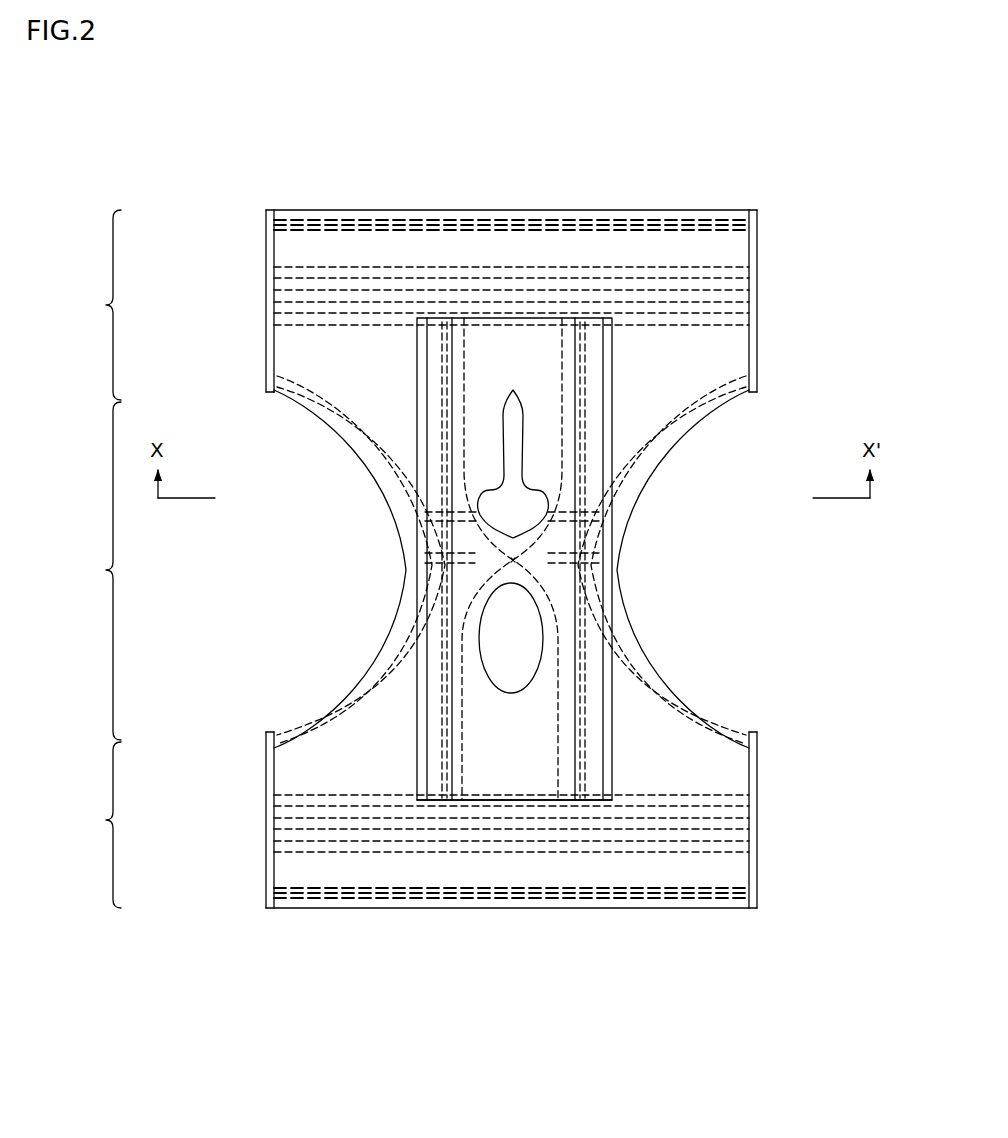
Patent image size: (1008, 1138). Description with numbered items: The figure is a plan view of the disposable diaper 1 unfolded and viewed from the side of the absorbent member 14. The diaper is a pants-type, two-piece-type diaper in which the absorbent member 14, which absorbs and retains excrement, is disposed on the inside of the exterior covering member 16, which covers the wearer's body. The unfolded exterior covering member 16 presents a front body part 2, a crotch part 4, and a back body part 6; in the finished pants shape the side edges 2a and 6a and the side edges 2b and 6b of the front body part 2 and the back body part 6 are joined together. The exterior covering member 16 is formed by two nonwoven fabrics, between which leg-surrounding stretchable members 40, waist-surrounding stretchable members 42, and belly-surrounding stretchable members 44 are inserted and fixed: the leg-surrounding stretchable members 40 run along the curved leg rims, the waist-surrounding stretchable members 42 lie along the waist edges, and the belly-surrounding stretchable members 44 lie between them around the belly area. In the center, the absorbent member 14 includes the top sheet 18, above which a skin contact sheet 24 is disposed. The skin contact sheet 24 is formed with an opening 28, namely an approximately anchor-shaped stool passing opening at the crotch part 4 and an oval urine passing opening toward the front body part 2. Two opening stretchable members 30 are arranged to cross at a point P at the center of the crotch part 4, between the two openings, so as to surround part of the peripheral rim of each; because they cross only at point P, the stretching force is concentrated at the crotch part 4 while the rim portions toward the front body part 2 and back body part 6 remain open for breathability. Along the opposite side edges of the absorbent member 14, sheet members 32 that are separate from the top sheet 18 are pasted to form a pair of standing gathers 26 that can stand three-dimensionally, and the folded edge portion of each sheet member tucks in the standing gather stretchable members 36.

The disposable diaper 1 is at (812, 142).
The front body part 2 is at (420, 820).
The side edge 2a is at (266, 825).
The side edge 2b is at (759, 823).
The crotch part 4 is at (416, 569).
The back body part 6 is at (420, 305).
The side edge 6a is at (266, 285).
The side edge 6b is at (759, 295).
The absorbent member 14 is at (619, 688).
The exterior covering member 16 is at (735, 356).
The top sheet 18 is at (525, 507).
The skin contact sheet 24 is at (509, 340).
The standing gathers 26 is at (428, 432).
The opening 28 is at (500, 497).
The opening stretchable members 30 is at (460, 767).
The sheet members 32 is at (417, 675).
The standing gather stretchable members 36 is at (455, 700).
The leg-surrounding stretchable members 40 is at (315, 400).
The waist-surrounding stretchable members 42 is at (620, 222).
The belly-surrounding stretchable members 44 is at (724, 267).
The point P is at (524, 562).